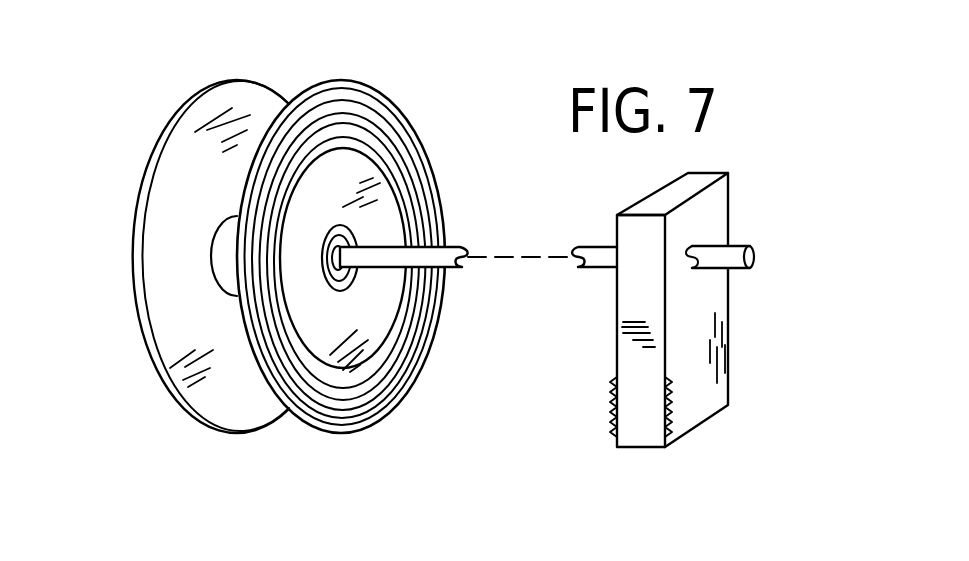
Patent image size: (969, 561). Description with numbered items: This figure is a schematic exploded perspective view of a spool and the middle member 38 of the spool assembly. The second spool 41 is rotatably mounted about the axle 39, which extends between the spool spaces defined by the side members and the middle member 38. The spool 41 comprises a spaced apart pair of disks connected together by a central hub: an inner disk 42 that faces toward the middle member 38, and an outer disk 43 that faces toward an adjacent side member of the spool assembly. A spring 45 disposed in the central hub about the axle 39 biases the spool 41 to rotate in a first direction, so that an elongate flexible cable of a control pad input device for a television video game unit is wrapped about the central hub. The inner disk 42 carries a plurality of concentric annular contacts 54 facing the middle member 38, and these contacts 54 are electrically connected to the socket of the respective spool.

The middle member 38 is at (730, 173).
The axle 39 is at (577, 268).
The second spool 41 is at (290, 74).
The inner disk 42 is at (390, 100).
The outer disk 43 is at (150, 160).
The spring 45 is at (357, 236).
The concentric annular contacts 54 is at (370, 425).